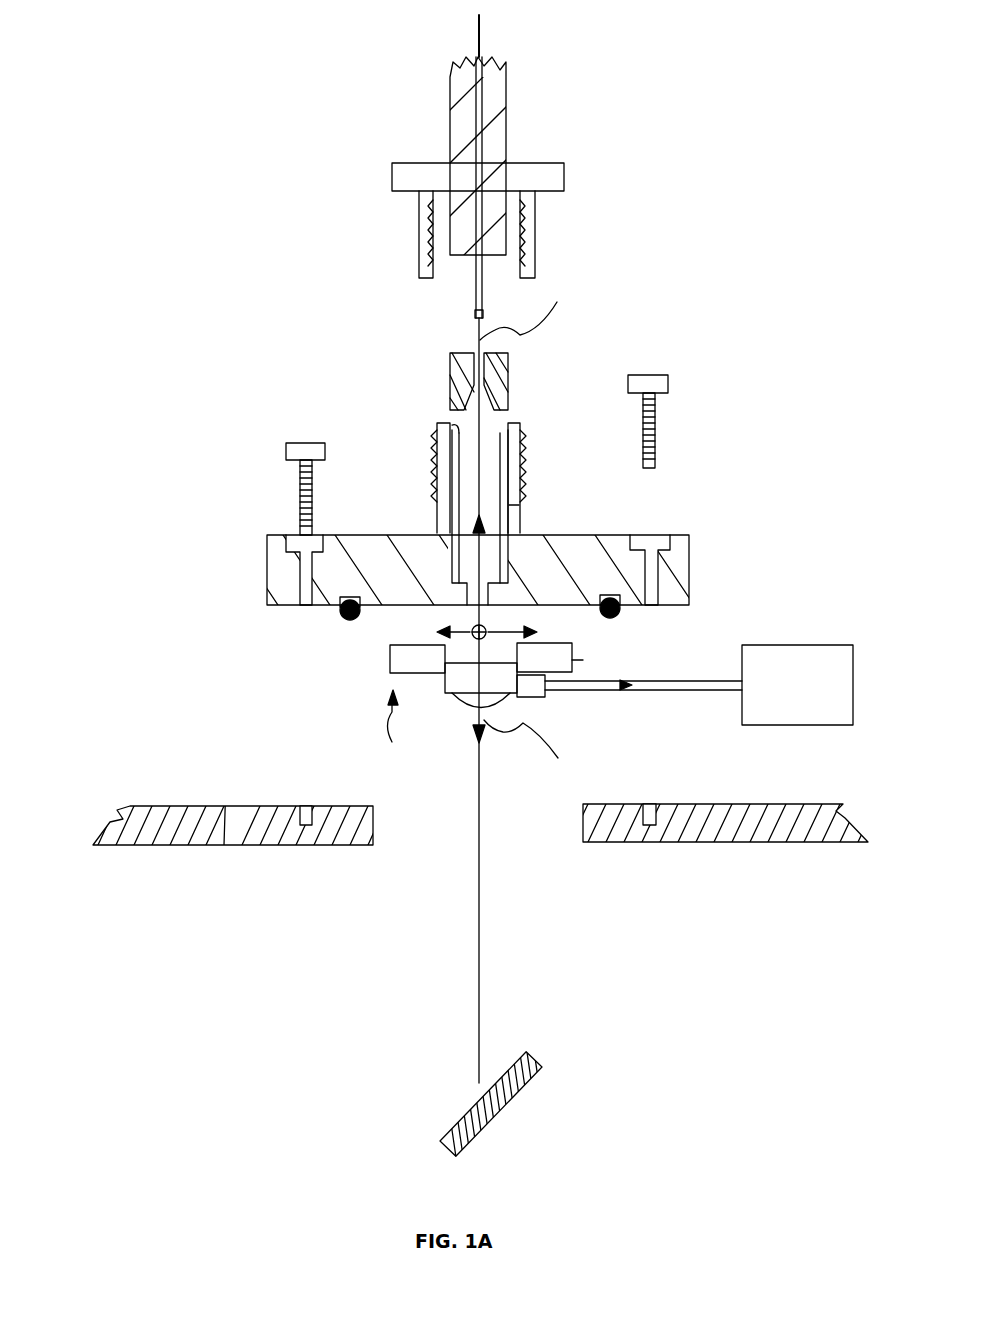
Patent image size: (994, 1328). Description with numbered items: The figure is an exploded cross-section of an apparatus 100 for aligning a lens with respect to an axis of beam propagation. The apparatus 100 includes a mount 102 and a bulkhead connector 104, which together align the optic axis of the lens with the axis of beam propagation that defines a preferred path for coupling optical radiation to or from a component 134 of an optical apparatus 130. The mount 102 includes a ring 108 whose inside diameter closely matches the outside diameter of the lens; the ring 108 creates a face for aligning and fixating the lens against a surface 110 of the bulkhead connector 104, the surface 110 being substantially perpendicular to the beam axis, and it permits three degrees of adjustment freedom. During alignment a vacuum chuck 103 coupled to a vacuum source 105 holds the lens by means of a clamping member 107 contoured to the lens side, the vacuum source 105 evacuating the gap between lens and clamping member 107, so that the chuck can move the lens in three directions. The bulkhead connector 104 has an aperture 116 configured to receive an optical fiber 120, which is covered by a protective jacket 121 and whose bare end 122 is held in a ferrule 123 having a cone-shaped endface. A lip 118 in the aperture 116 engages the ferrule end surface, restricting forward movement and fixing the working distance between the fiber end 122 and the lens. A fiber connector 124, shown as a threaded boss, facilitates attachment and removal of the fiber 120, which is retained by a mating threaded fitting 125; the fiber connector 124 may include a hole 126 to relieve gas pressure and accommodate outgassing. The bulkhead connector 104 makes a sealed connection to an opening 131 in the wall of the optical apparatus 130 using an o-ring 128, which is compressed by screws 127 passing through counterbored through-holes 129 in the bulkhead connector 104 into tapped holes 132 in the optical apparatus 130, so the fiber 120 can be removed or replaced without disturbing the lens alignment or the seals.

The apparatus 100 is at (176, 414).
The mount 102 is at (392, 741).
The vacuum chuck 103 is at (710, 680).
The bulkhead connector 104 is at (689, 548).
The vacuum source 105 is at (810, 645).
The clamping member 107 is at (532, 697).
The ring 108 is at (420, 673).
The surface 110 is at (395, 607).
The aperture 116 is at (535, 620).
The lip 118 is at (452, 435).
The optical fiber 120 is at (479, 57).
The protective jacket 121 is at (450, 118).
The bare end 122 is at (470, 330).
The ferrule 123 is at (450, 380).
The fiber connector 124 is at (520, 425).
The mating threaded fitting 125 is at (392, 175).
The hole 126 is at (513, 513).
The screws 127 is at (286, 450).
The o-ring 128 is at (347, 620).
The counterbored through-holes 129 is at (306, 600).
The optical apparatus 130 is at (177, 806).
The opening 131 is at (392, 857).
The tapped holes 132 is at (300, 807).
The component 134 is at (533, 1053).